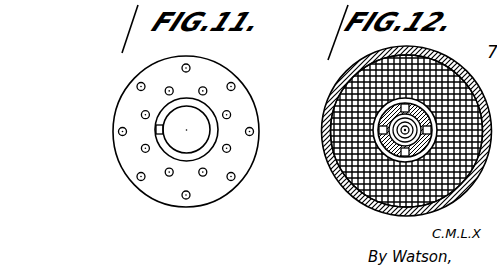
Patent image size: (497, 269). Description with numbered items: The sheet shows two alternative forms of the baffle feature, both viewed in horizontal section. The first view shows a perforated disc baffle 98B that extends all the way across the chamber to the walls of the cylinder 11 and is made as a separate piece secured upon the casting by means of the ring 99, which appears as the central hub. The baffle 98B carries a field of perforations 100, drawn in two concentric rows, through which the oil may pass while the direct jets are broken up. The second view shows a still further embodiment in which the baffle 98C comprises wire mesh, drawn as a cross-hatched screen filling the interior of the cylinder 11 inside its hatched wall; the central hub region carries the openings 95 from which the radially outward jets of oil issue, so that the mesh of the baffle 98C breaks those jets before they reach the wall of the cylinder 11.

In FIG. 11, the baffle 98B is at (126, 104).
In FIG. 11, the ring 99 is at (163, 147).
In FIG. 11, the perforations 100 is at (189, 67).
In FIG. 12, the cylinder 11 is at (325, 124).
In FIG. 12, the baffle 98C is at (360, 172).
In FIG. 12, the openings 95 is at (403, 153).